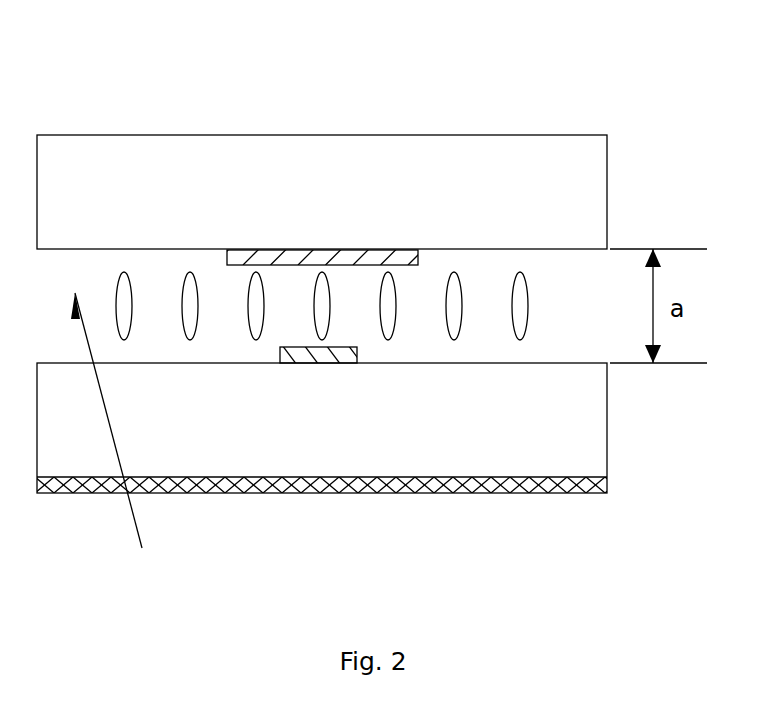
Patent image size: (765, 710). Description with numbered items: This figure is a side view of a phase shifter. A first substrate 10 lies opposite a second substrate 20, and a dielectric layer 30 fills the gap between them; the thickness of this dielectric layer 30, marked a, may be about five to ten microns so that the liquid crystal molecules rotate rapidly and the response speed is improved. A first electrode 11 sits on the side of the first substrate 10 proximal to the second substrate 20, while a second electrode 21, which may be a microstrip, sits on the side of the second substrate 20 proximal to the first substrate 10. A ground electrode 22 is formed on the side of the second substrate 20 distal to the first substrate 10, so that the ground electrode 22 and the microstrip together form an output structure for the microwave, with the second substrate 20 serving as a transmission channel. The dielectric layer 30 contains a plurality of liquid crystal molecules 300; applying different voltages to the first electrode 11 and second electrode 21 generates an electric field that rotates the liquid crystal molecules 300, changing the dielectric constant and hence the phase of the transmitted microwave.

The first substrate 10 is at (500, 175).
The first electrode 11 is at (302, 258).
The second substrate 20 is at (485, 435).
The second electrode 21 is at (335, 352).
The ground electrode 22 is at (305, 480).
The dielectric layer 30 is at (116, 438).
The liquid crystal molecules 300 is at (190, 293).